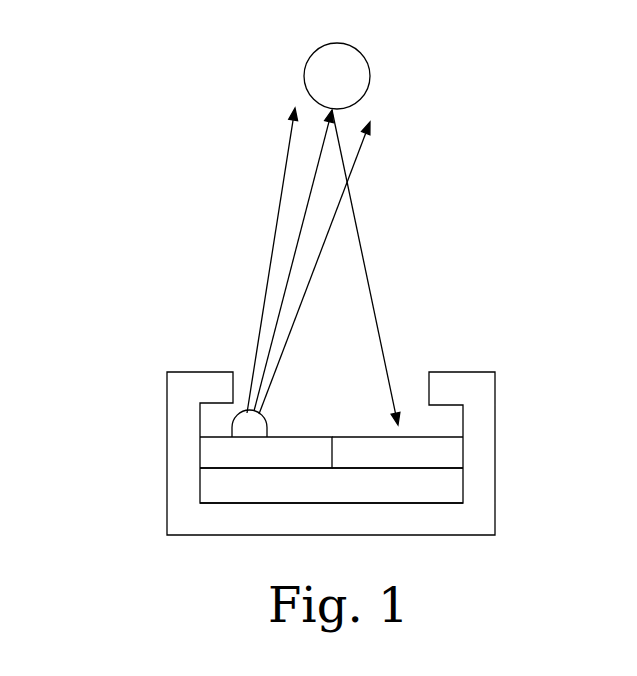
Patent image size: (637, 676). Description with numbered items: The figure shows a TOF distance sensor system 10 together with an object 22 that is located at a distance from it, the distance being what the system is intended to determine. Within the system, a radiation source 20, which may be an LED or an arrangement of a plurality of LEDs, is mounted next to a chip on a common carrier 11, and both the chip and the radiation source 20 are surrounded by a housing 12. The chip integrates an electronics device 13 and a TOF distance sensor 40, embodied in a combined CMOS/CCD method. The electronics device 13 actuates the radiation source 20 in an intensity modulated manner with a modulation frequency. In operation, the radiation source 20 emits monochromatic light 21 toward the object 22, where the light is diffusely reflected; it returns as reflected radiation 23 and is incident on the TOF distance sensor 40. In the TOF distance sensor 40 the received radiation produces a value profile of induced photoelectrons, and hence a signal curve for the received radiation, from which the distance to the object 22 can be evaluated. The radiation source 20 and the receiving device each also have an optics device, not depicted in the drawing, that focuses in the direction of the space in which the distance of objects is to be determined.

The TOF distance sensor system 10 is at (205, 222).
The common carrier 11 is at (240, 490).
The housing 12 is at (473, 490).
The electronics device 13 is at (240, 457).
The radiation source 20 is at (243, 420).
The monochromatic light 21 is at (247, 332).
The object 22 is at (352, 75).
The reflected radiation 23 is at (372, 260).
The TOF distance sensor 40 is at (428, 450).